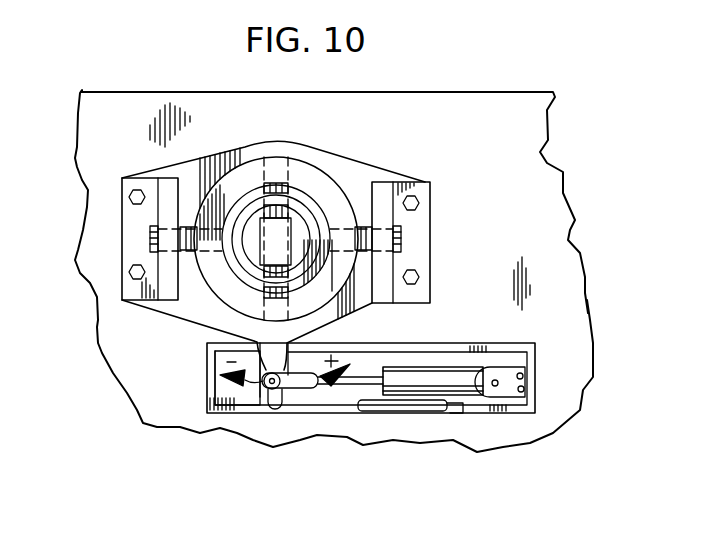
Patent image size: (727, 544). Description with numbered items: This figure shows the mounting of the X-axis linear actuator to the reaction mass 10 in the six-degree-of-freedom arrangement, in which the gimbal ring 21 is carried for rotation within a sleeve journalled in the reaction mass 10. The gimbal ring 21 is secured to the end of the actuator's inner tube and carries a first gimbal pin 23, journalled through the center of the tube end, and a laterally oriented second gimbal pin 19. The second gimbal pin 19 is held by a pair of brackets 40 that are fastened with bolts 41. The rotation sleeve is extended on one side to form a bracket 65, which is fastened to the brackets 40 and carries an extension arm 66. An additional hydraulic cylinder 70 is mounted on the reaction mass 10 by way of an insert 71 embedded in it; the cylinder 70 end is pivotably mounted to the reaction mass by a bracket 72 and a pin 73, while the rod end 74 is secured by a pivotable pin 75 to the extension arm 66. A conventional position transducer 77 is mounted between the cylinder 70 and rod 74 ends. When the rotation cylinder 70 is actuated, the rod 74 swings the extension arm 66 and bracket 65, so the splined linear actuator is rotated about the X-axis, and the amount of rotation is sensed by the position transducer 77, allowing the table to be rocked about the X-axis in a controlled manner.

The reaction mass 10 is at (334, 271).
The second gimbal pin 19 is at (152, 238).
The gimbal ring 21 is at (323, 170).
The first gimbal pin 23 is at (270, 168).
The brackets 40 is at (147, 302).
The bolts 41 is at (132, 192).
The bracket 65 is at (371, 165).
The extension arm 66 is at (212, 376).
The hydraulic cylinder 70 is at (415, 380).
The insert 71 is at (237, 406).
The bracket 72 is at (514, 395).
The pin 73 is at (497, 382).
The rod end 74 is at (347, 390).
The pivotable pin 75 is at (277, 407).
The position transducer 77 is at (382, 404).